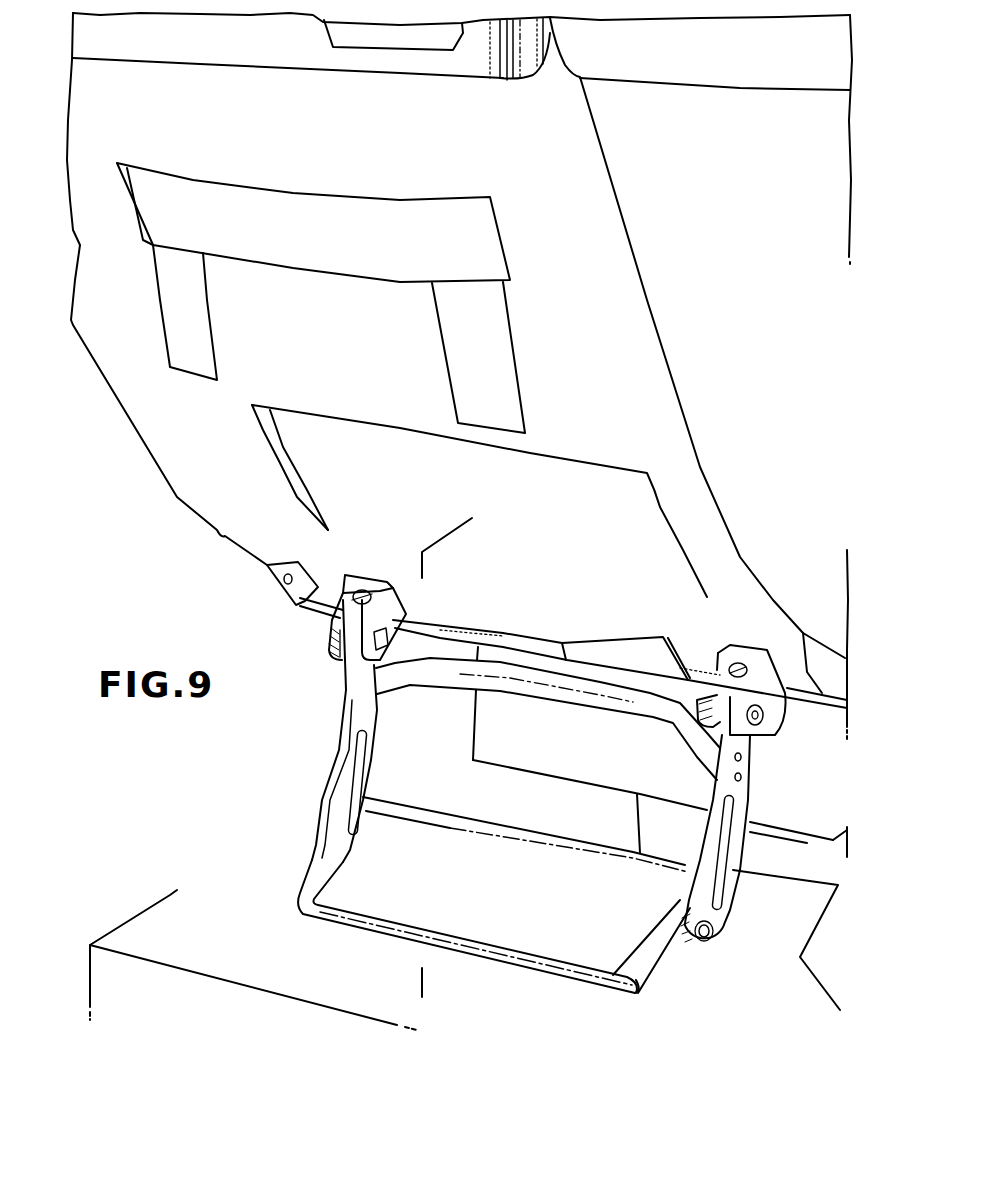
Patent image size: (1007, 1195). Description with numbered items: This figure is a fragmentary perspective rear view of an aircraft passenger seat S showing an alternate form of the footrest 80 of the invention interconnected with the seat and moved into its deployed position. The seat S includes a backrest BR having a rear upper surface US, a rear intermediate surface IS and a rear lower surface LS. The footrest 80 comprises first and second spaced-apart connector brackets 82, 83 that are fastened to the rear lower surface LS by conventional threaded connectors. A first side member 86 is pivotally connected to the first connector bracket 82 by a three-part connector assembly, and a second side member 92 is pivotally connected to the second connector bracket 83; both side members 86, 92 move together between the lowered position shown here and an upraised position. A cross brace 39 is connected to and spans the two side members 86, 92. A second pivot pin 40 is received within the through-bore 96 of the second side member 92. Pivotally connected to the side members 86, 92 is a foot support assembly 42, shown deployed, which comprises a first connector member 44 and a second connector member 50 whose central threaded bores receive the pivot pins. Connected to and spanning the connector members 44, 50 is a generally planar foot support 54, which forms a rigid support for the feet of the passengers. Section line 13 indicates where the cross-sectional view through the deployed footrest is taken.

The section line 13- 13 is at (452, 532).
The cross brace 39 is at (553, 697).
The second pivot pin 40 is at (718, 929).
The foot support assembly 42 is at (475, 906).
The first connector member 44 is at (475, 906).
The second connector member 50 is at (675, 970).
The planar foot support 54 is at (512, 880).
The footrest 80 is at (541, 757).
The first connector bracket 82 is at (367, 600).
The second connector bracket 83 is at (755, 700).
The first side member 86 is at (325, 769).
The second side member 92 is at (713, 855).
The through-bore 96 is at (707, 942).
The aircraft passenger seat S is at (171, 500).
The backrest BR is at (573, 232).
The rear upper surface US is at (321, 281).
The rear intermediate surface IS is at (479, 475).
The rear lower surface LS is at (560, 606).